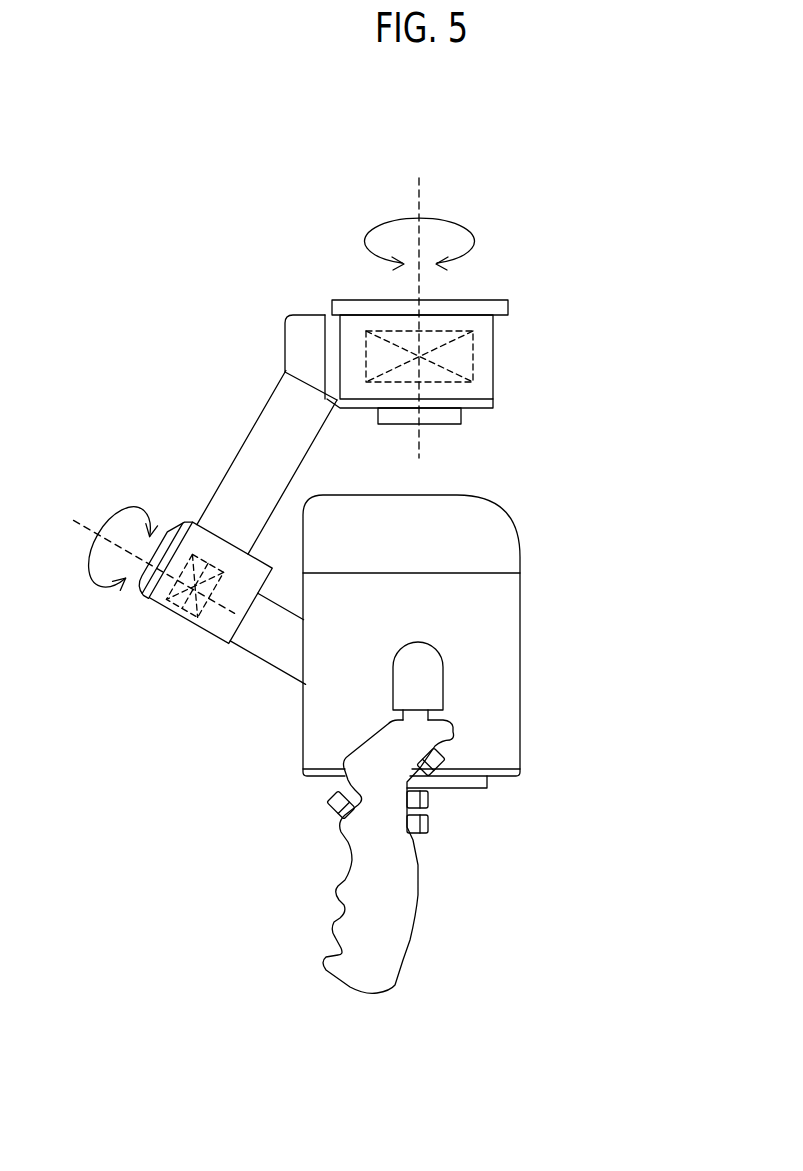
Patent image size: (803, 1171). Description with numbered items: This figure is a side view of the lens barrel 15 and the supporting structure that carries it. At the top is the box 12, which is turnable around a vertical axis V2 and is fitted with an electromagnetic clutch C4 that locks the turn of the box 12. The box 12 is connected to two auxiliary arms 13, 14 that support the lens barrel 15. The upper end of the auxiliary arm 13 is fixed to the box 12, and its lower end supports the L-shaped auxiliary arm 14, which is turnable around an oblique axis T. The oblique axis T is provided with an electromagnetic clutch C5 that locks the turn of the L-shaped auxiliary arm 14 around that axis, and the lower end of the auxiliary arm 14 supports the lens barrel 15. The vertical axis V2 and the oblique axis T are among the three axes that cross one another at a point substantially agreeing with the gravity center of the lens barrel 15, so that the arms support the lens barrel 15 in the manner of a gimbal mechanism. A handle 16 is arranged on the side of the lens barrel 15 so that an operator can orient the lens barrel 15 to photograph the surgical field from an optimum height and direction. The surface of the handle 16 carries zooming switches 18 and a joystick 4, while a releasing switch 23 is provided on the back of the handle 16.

The box 12 is at (493, 342).
The electromagnetic clutch C4 is at (473, 366).
The auxiliary arm 13 is at (245, 442).
The electromagnetic clutch C5 is at (180, 617).
The oblique axis T is at (153, 566).
The vertical axis V2 is at (420, 299).
The auxiliary arm 14 is at (277, 673).
The lens barrel 15 is at (520, 667).
The handle 16 is at (411, 938).
The joystick 4 is at (443, 755).
The zooming switch 18 is at (430, 798).
The releasing switch 23 is at (334, 797).